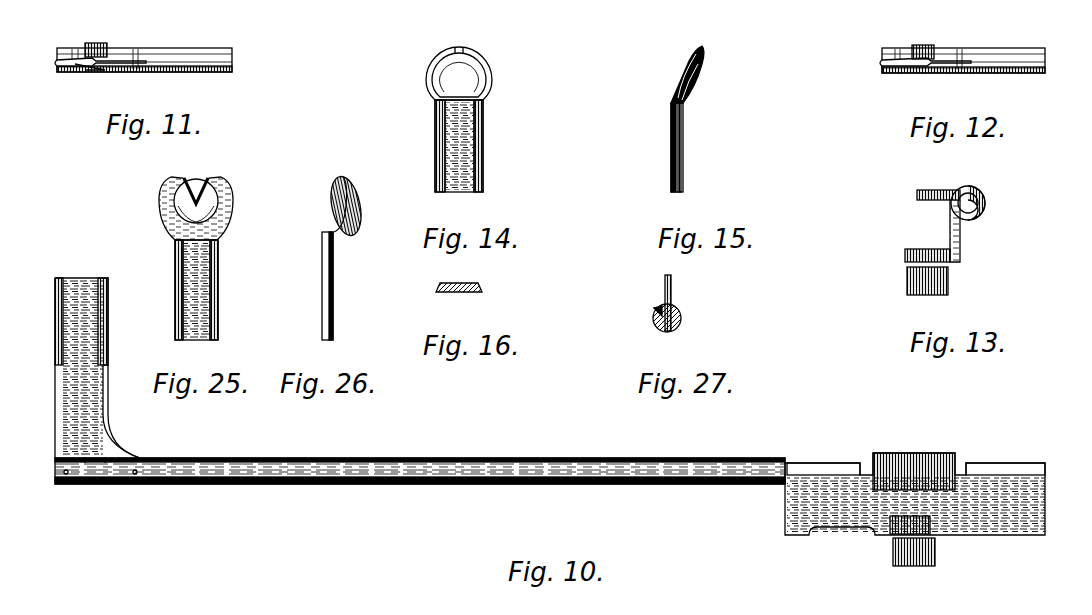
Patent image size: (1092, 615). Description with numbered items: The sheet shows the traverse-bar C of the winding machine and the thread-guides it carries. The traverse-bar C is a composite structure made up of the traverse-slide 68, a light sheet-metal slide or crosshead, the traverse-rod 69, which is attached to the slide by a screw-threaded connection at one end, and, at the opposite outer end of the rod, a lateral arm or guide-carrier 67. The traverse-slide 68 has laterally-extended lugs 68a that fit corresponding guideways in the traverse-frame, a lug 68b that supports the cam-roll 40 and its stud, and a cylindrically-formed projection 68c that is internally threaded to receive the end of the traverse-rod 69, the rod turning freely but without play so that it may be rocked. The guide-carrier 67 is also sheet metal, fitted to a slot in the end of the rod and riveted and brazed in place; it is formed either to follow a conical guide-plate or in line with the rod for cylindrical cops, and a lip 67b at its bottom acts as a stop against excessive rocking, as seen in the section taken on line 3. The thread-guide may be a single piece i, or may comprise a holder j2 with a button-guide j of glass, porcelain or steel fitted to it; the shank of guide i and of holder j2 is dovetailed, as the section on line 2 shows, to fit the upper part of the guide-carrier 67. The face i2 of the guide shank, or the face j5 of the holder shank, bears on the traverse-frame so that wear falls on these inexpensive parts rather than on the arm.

In FIG. 10, the guide-carrier 67 is at (55, 403).
In FIG. 11, the guide-carrier 67 is at (70, 72).
In FIG. 12, the guide-carrier 67 is at (908, 60).
In FIG. 27, the guide-carrier 67 is at (671, 290).
In FIG. 11, the lip 67b is at (95, 43).
In FIG. 12, the lip 67b is at (922, 45).
In FIG. 27, the lip 67b is at (655, 306).
In FIG. 10, the traverse-rod 69 is at (383, 458).
In FIG. 27, the traverse-rod 69 is at (681, 320).
In FIG. 10, the section line 3 3 is at (110, 434).
In FIG. 10, the traverse-bar C is at (629, 436).
In FIG. 10, the traverse-slide 68 is at (1047, 500).
In FIG. 13, the traverse-slide 68 is at (960, 241).
In FIG. 10, the laterally-extended lugs 68a is at (848, 468).
In FIG. 13, the laterally-extended lugs 68a is at (928, 190).
In FIG. 10, the lug 68b is at (887, 534).
In FIG. 13, the lug 68b is at (900, 254).
In FIG. 10, the cylindrically-formed projection 68c is at (908, 454).
In FIG. 13, the cylindrically-formed projection 68c is at (986, 190).
In FIG. 10, the cam-roll 40 is at (935, 555).
In FIG. 13, the cam-roll 40 is at (948, 288).
In FIG. 14, the thread-guide i is at (487, 72).
In FIG. 15, the thread-guide i is at (683, 112).
In FIG. 14, the face of the shank of the guide i2 is at (470, 136).
In FIG. 15, the face of the shank of the guide i2 is at (671, 128).
In FIG. 14, the section line 2 2 is at (438, 165).
In FIG. 25, the section line 2 2 is at (236, 312).
In FIG. 25, the button-guide j is at (223, 224).
In FIG. 26, the button-guide j is at (357, 198).
In FIG. 25, the holder j2 is at (203, 256).
In FIG. 26, the holder j2 is at (335, 248).
In FIG. 26, the face of the shank of the guide-holder j5 is at (322, 292).